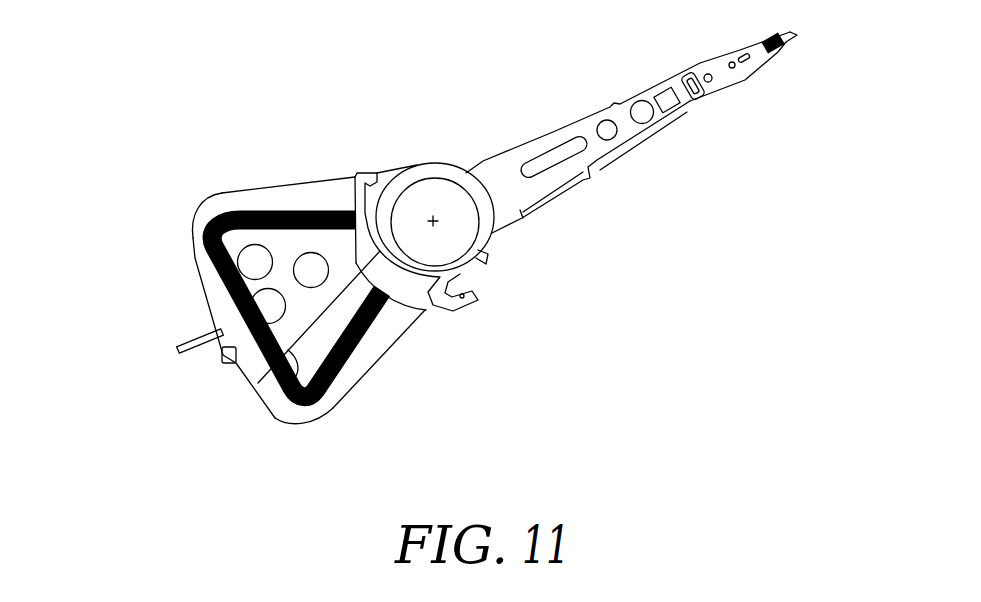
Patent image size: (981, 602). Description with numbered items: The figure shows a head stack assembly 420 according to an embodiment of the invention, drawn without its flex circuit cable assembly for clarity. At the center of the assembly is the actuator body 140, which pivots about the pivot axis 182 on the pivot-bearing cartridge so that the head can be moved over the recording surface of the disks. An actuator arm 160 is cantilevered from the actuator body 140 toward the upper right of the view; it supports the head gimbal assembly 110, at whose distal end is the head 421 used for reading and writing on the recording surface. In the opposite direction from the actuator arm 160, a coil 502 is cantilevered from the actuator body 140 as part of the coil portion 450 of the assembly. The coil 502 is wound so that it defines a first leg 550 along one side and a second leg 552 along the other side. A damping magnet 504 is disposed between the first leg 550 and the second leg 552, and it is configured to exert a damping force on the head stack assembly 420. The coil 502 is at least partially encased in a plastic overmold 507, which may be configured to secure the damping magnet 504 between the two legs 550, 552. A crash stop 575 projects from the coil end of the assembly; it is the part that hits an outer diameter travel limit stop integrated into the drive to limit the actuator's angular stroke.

The head stack assembly 420 is at (207, 110).
The coil assembly 450 is at (168, 210).
The coil 502 is at (247, 372).
The damping magnet 504 is at (288, 380).
The first leg 550 is at (292, 211).
The second leg 552 is at (362, 337).
The plastic overmold 507 is at (250, 289).
The crash stop 575 is at (172, 333).
The pivot axis 182 is at (431, 215).
The actuator body 140 is at (508, 253).
The actuator arm 160 is at (583, 130).
The head gimbal assembly 110 is at (818, 52).
The head 421 is at (803, 39).